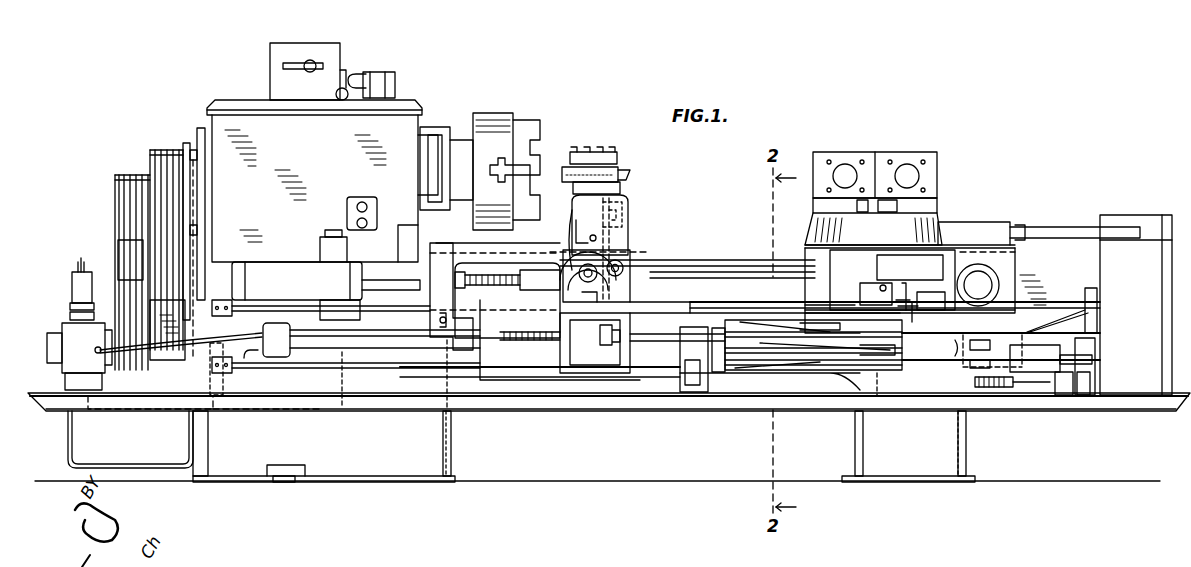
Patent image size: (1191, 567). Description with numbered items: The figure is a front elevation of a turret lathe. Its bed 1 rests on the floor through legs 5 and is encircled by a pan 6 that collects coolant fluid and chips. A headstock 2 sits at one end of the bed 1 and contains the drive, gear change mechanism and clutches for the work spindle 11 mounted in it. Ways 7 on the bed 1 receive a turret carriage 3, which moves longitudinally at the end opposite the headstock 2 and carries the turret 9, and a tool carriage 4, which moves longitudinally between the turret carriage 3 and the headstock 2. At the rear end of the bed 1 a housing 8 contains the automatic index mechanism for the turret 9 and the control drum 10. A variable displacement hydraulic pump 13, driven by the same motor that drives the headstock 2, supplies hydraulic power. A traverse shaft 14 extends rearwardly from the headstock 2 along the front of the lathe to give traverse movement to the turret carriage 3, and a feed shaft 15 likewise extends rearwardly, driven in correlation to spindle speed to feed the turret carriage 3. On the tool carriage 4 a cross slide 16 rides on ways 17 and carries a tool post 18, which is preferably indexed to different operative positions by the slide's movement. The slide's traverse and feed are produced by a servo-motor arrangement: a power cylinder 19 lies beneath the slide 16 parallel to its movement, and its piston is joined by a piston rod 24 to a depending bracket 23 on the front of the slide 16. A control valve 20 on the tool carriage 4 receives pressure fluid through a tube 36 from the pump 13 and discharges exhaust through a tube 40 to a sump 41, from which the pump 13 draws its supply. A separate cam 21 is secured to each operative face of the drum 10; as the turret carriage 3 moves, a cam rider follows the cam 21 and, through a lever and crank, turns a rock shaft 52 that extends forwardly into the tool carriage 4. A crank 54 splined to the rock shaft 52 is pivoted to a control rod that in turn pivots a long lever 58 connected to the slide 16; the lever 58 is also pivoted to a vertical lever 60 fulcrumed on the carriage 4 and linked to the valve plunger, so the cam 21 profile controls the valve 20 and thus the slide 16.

The bed 1 is at (513, 396).
The headstock 2 is at (233, 122).
The turret carriage 3 is at (958, 223).
The tool carriage 4 is at (610, 280).
The legs 5 is at (452, 446).
The pan 6 is at (629, 411).
The ways 7 is at (764, 252).
The housing 8 is at (1140, 250).
The turret 9 is at (900, 152).
The control drum 10 is at (826, 355).
The work spindle 11 is at (176, 160).
The variable displacement hydraulic pump 13 is at (82, 272).
The traverse shaft 14 is at (320, 367).
The feed shaft 15 is at (678, 308).
The cross slide 16 is at (628, 201).
The ways 17 is at (574, 222).
The tool post 18 is at (592, 158).
The power cylinder 19 is at (585, 264).
The control valve 20 is at (623, 266).
The cam 21 is at (808, 322).
The depending bracket 23 is at (580, 280).
The piston rod 24 is at (586, 302).
The tube 36 is at (402, 324).
The tube 40 is at (378, 352).
The sump 41 is at (242, 412).
The rock shaft 52 is at (645, 340).
The crank 54 is at (610, 345).
The lever 58 is at (628, 226).
The vertical lever 60 is at (681, 331).